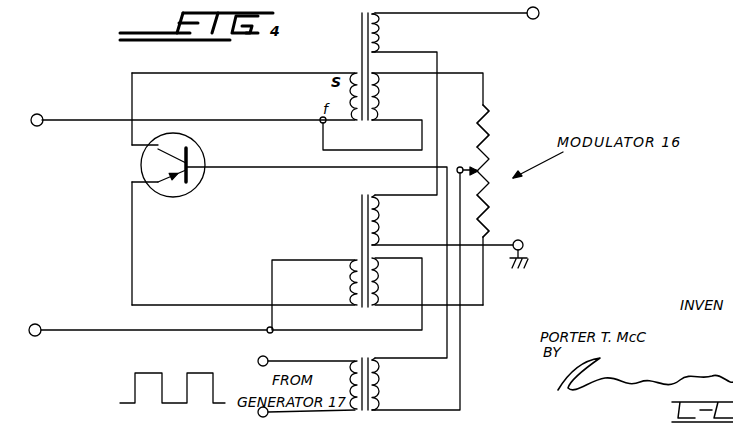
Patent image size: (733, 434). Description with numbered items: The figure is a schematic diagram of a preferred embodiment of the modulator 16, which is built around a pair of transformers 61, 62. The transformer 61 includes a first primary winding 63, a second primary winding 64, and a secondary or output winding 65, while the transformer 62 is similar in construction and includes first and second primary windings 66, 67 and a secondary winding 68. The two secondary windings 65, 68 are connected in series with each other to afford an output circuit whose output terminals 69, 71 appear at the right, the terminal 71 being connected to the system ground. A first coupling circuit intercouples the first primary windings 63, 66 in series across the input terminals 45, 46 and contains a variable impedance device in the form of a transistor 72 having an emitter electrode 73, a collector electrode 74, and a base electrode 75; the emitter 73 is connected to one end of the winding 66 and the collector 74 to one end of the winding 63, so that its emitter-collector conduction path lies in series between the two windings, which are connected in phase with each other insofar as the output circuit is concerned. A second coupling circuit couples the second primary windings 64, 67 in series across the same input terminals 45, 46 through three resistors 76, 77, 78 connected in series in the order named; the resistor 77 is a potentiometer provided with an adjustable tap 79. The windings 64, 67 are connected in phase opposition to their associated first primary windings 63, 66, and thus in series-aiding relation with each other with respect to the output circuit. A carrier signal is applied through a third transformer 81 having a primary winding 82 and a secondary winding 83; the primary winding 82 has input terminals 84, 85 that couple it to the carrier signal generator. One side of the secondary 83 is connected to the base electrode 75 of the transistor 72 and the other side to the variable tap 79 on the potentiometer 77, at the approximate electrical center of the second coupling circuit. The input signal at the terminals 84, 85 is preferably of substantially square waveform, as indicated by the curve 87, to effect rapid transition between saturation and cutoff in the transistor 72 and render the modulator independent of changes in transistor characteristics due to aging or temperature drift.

The modulator 16 is at (98, 44).
The input terminal 45 is at (43, 124).
The input terminal 46 is at (41, 325).
The transformer 61 is at (352, 60).
The transformer 62 is at (353, 237).
The first primary winding 63 is at (340, 98).
The second primary winding 64 is at (388, 95).
The secondary winding 65 is at (387, 28).
The first primary winding 66 is at (343, 272).
The second primary winding 67 is at (388, 274).
The secondary winding 68 is at (388, 218).
The output terminal 69 is at (539, 11).
The output terminal 71 is at (524, 242).
The transistor 72 is at (189, 197).
The emitter electrode 73 is at (164, 185).
The collector electrode 74 is at (158, 149).
The base electrode 75 is at (197, 162).
The resistor 76 is at (492, 118).
The resistor 77 is at (490, 172).
The resistor 78 is at (490, 210).
The adjustable tap 79 is at (469, 171).
The third transformer 81 is at (366, 358).
The primary winding 82 is at (345, 370).
The secondary winding 83 is at (388, 385).
The input terminal 84 is at (258, 359).
The input terminal 85 is at (258, 413).
The curve 87 is at (150, 372).